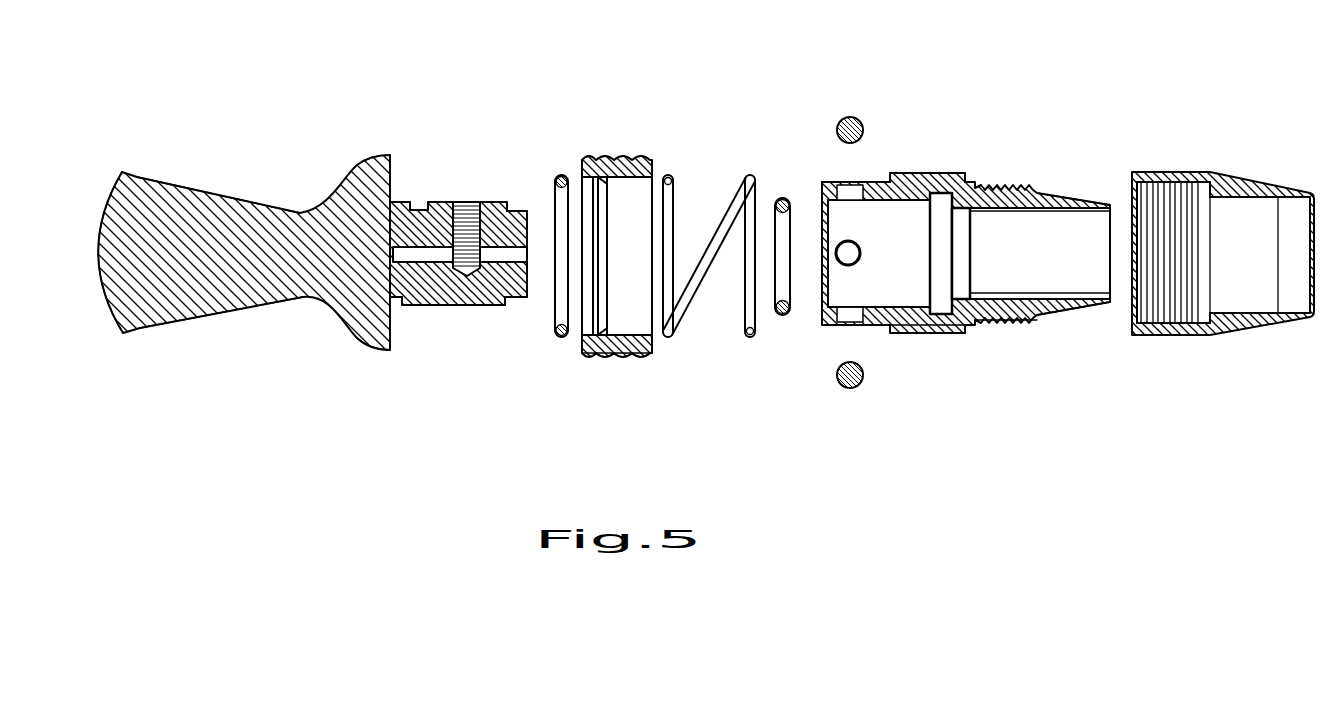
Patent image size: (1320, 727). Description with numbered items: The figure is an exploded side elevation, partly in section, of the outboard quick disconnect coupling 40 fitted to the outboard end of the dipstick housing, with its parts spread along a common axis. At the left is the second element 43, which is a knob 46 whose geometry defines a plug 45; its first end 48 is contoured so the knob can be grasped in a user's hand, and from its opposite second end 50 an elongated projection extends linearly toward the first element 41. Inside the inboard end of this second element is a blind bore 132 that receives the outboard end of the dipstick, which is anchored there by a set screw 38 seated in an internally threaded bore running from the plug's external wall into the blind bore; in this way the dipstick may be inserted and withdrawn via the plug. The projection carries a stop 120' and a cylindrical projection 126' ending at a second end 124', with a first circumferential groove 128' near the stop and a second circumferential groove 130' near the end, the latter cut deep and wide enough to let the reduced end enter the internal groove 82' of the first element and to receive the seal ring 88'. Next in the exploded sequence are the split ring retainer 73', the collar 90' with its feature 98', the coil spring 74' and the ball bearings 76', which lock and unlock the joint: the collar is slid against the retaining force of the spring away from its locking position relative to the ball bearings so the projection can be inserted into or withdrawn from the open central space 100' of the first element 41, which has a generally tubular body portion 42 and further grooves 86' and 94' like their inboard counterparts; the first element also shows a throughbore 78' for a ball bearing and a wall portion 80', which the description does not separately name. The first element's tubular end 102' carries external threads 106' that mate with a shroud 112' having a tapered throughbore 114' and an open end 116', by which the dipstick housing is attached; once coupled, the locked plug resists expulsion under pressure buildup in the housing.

The set screw 38 is at (470, 202).
The outboard quick disconnect coupling 40 is at (623, 148).
The first element of the outboard coupling 41 is at (959, 265).
The tubular body portion 42 is at (928, 173).
The second element of the outboard coupling 43 is at (305, 178).
The plug 45 is at (268, 315).
The knob 46 is at (200, 178).
The first end of the knob 48 is at (180, 283).
The second end of the knob 50 is at (370, 158).
The split ring retainer 73' is at (570, 197).
The coil spring 74' is at (709, 222).
The ball bearings 76' is at (859, 212).
The ball hole 78' is at (872, 190).
The lower body wall 80' is at (927, 349).
The groove 82' is at (1000, 209).
The groove 86' is at (957, 207).
The seal ring 88' is at (795, 211).
The collar 90' is at (632, 403).
The groove 94' is at (825, 296).
The ring lip 98' is at (565, 370).
The open central space 100' is at (879, 363).
The first tubular end 102' is at (1051, 212).
The external threads 106' is at (1010, 373).
The shroud 112' is at (1219, 248).
The throughbore 114' is at (1254, 287).
The open end 116' is at (1161, 290).
The stop 120' is at (466, 225).
The second end 124' is at (522, 331).
The cylindrical projection 126' is at (453, 358).
The first circumferential groove 128' is at (428, 160).
The second circumferential groove 130' is at (522, 158).
The blind bore 132 is at (430, 255).